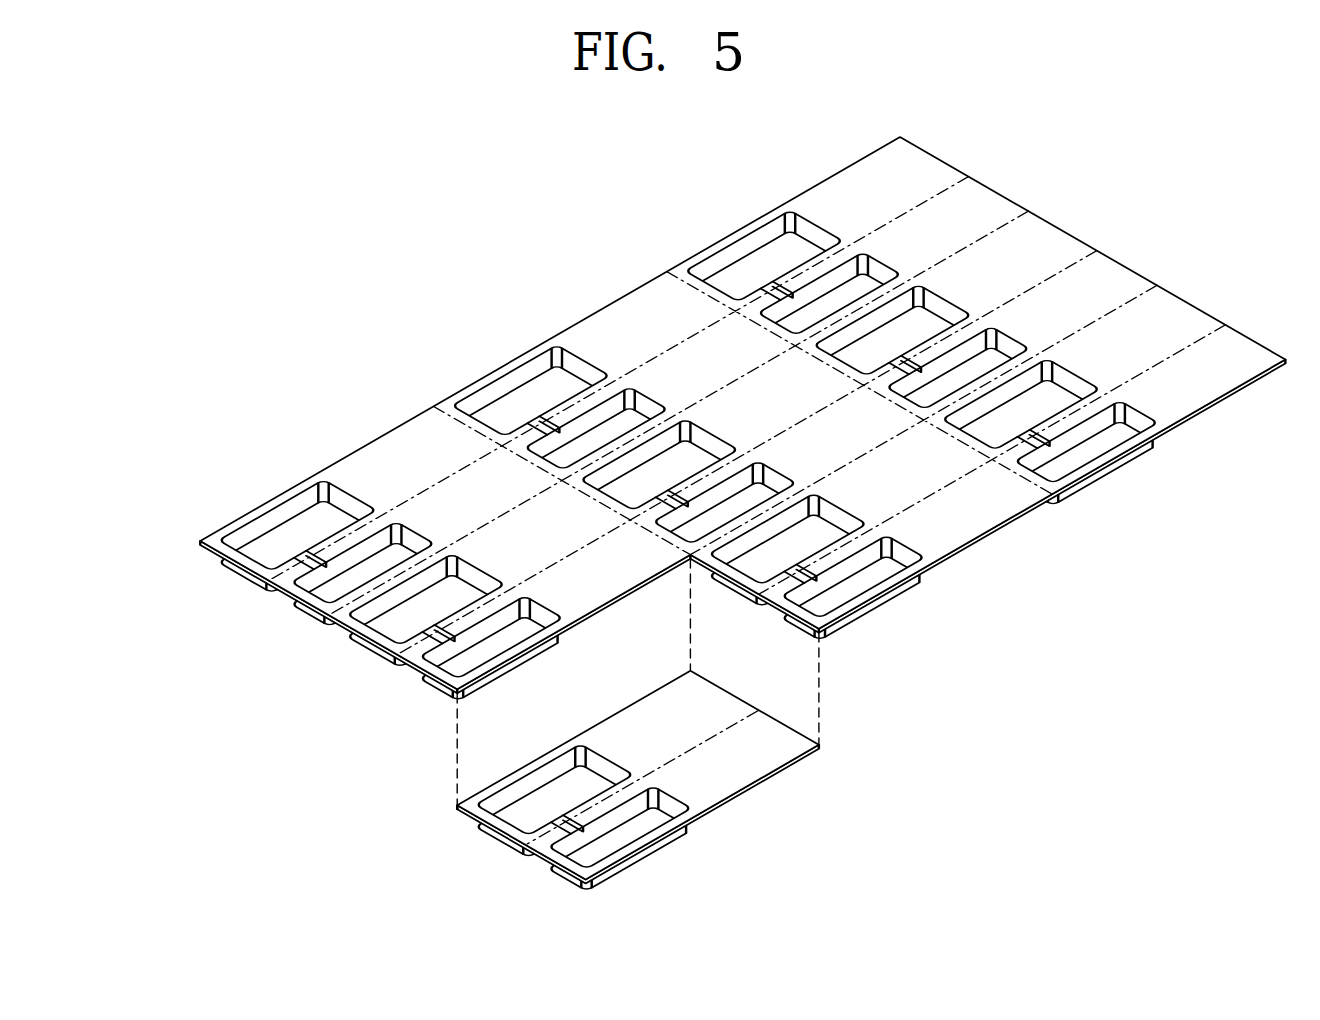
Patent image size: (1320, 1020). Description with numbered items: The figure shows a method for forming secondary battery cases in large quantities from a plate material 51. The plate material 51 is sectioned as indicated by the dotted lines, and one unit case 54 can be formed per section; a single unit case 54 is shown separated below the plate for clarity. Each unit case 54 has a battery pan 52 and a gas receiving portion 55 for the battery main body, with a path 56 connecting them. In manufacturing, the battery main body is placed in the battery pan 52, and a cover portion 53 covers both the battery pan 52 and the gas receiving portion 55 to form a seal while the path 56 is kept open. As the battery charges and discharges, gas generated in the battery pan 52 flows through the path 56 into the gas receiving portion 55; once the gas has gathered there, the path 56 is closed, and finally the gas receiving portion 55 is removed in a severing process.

The plate material 51 is at (500, 283).
The battery pan 52 is at (530, 808).
The cover portion 53 is at (760, 783).
The unit case 54 is at (628, 810).
The gas receiving portion 55 is at (590, 852).
The path 56 is at (567, 822).